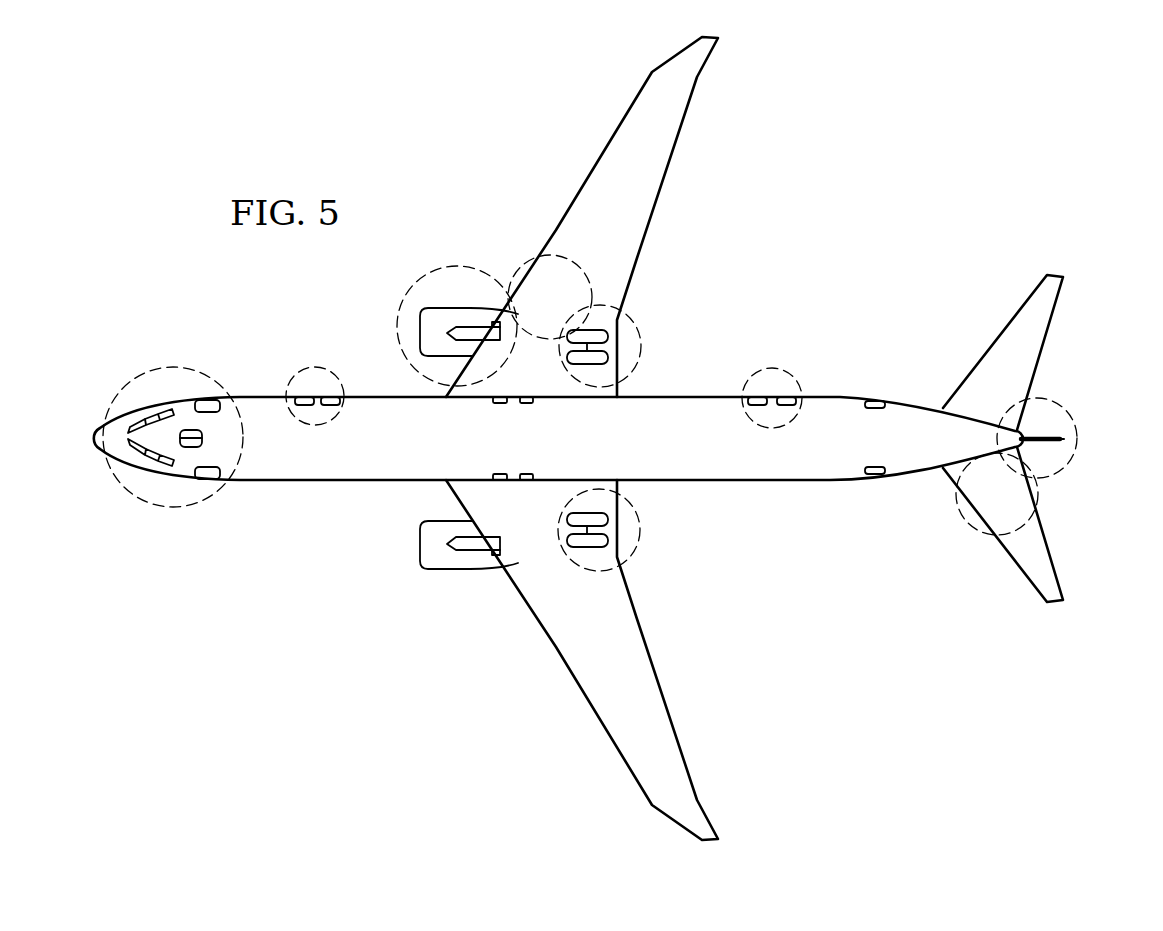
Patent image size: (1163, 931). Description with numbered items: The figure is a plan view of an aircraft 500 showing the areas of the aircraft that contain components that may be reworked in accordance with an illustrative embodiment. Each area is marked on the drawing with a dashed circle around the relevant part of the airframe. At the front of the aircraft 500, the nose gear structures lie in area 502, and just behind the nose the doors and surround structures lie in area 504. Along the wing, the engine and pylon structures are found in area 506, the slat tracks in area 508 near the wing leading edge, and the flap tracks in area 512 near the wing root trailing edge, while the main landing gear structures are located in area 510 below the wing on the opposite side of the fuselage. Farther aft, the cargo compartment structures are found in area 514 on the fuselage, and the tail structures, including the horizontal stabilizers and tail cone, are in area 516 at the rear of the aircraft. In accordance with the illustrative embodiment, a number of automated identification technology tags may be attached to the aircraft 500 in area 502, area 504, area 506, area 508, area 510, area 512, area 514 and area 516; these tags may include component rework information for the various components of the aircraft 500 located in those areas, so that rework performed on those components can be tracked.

The aircraft 500 is at (853, 175).
The area 502 is at (172, 368).
The area 504 is at (315, 427).
The area 506 is at (397, 322).
The area 508 is at (583, 261).
The area 510 is at (559, 515).
The area 512 is at (561, 372).
The area 514 is at (772, 367).
The area 516 is at (1078, 433).